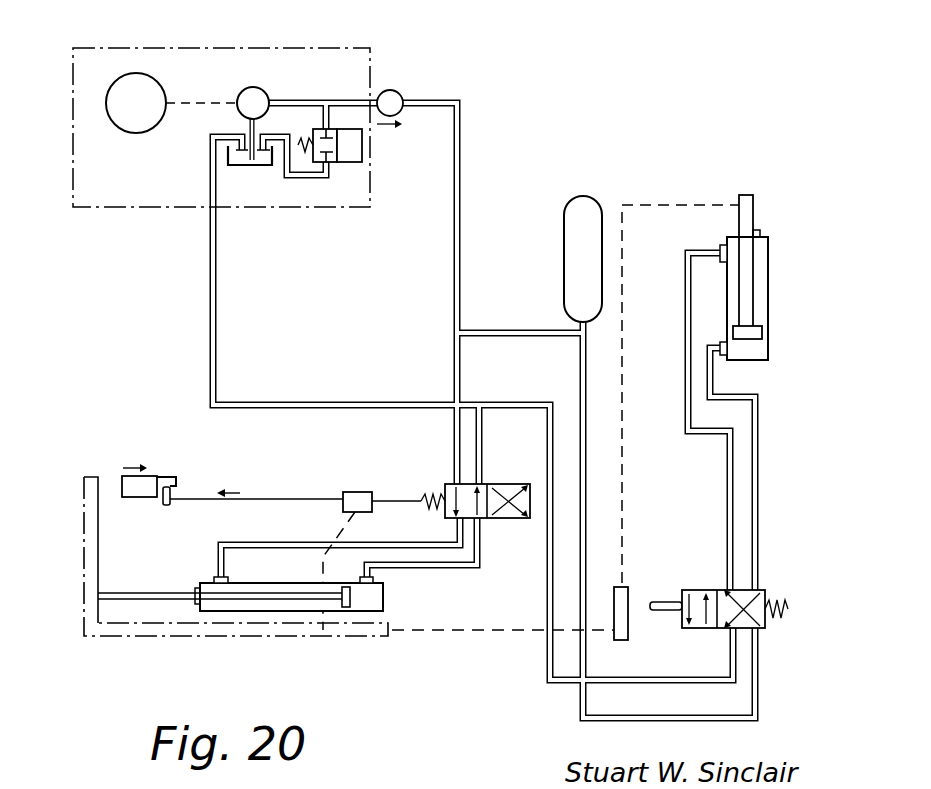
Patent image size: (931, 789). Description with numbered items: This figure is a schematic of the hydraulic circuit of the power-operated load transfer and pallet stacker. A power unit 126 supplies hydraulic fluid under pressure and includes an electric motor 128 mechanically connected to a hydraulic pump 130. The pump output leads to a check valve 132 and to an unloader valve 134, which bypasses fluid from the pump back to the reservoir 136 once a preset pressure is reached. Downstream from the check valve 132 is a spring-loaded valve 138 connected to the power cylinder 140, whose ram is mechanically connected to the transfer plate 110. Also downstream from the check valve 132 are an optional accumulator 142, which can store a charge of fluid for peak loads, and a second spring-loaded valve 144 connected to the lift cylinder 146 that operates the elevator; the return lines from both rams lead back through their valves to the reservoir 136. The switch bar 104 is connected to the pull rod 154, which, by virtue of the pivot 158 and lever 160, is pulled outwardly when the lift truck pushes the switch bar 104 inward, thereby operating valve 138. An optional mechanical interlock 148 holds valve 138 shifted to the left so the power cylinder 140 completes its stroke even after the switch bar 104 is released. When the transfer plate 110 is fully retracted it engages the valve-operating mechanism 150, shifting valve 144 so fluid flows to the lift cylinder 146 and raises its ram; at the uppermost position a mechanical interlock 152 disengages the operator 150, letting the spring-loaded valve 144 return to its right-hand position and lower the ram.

The switch bar 104 is at (158, 477).
The transfer plate 110 is at (83, 490).
The power unit 126 is at (82, 214).
The electric motor 128 is at (138, 73).
The hydraulic pump 130 is at (258, 87).
The check valve 132 is at (392, 90).
The unloader valve 134 is at (362, 150).
The reservoir 136 is at (237, 168).
The spring-loaded valve 138 is at (500, 484).
The power cylinder 140 is at (383, 593).
The accumulator 142 is at (564, 243).
The spring-loaded valve 144 is at (765, 590).
The lift cylinder 146 is at (768, 290).
The mechanical interlock 148 is at (350, 490).
The valve-operating mechanism 150 is at (458, 633).
The mechanical interlock 152 is at (622, 548).
The pull rod 154 is at (258, 499).
The pivot 158 is at (171, 487).
The lever 160 is at (165, 505).